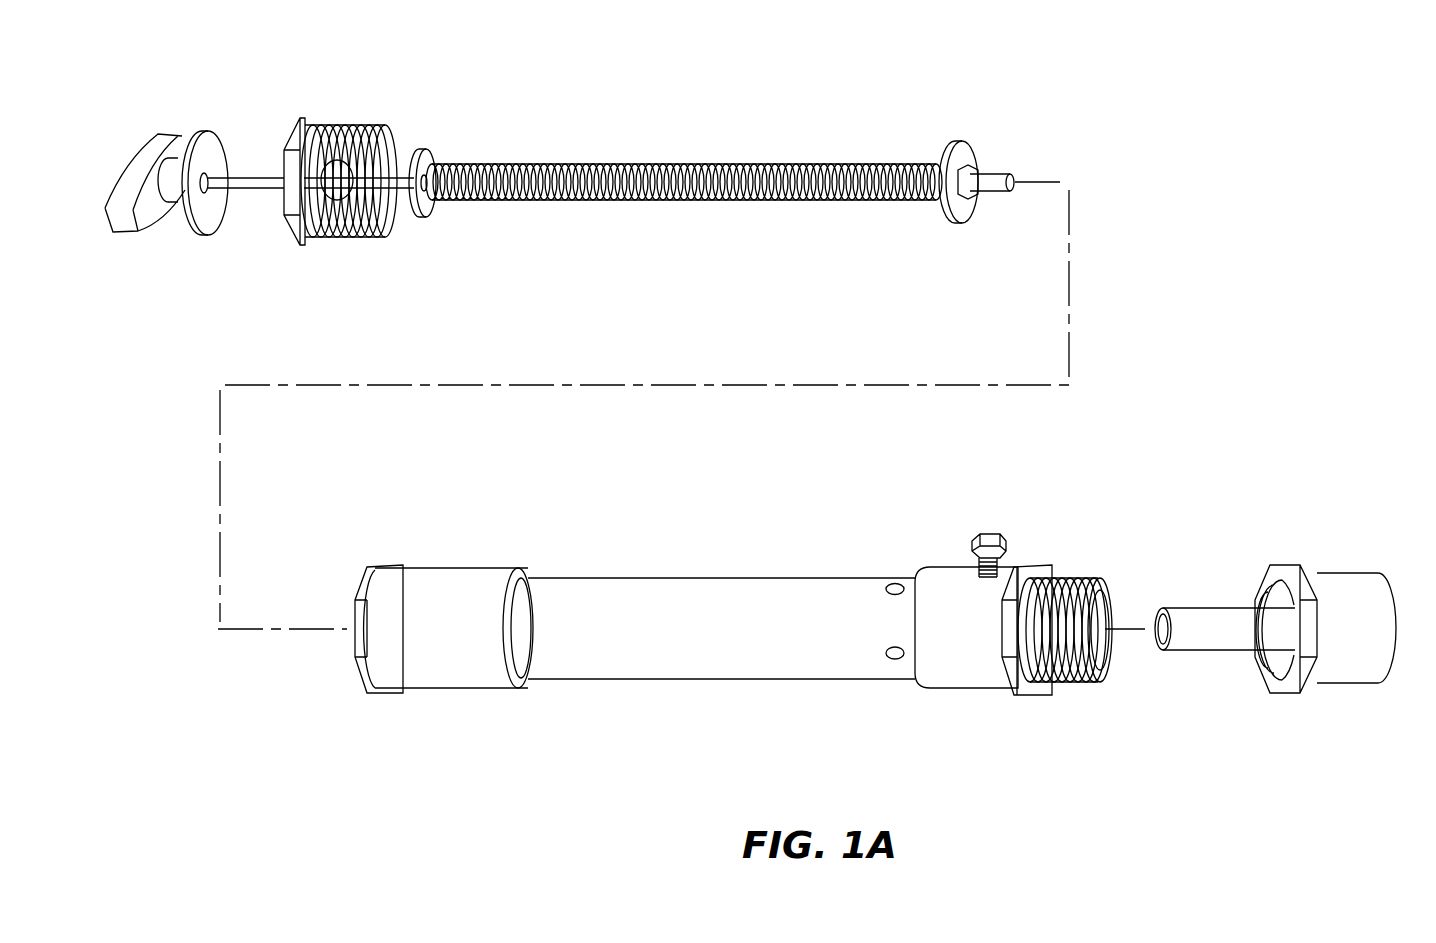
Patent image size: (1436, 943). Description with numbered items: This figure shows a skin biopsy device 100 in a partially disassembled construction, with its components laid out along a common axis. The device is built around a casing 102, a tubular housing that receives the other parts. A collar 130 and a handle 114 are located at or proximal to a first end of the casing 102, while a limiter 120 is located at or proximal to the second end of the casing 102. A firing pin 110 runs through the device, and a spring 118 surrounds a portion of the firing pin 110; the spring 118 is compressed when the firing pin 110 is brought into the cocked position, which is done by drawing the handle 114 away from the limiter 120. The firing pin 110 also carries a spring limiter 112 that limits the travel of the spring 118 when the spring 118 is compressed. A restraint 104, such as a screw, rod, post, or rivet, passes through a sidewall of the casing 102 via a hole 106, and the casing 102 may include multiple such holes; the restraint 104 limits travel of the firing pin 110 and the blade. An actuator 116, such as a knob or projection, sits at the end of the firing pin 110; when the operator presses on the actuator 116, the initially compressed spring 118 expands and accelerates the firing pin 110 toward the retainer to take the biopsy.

The skin biopsy device 100 is at (1292, 186).
The casing 102 is at (756, 655).
The restraint 104 is at (995, 542).
The hole 106 is at (893, 578).
The firing pin 110 is at (826, 131).
The spring limiter 112 is at (418, 150).
The handle 114 is at (148, 213).
The actuator 116 is at (198, 130).
The spring 118 is at (577, 162).
The limiter 120 is at (1365, 548).
The collar 130 is at (340, 100).